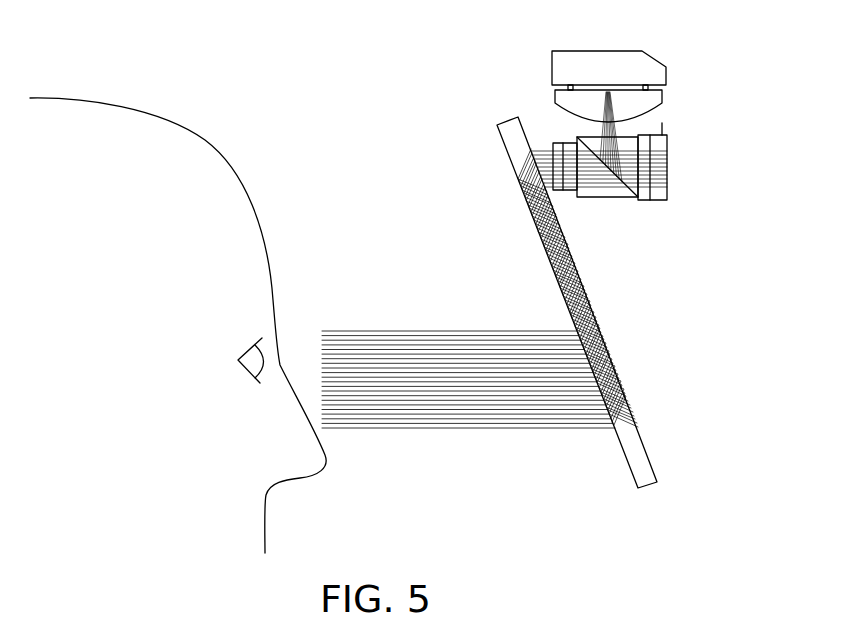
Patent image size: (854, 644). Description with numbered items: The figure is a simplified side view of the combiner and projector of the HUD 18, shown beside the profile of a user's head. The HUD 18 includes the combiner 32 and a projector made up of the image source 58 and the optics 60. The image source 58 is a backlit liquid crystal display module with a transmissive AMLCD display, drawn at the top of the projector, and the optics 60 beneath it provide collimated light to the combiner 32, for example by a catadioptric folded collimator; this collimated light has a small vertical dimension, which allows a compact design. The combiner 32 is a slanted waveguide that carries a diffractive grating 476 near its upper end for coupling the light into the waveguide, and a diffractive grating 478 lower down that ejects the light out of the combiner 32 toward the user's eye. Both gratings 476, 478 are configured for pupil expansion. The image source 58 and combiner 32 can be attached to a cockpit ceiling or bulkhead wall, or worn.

The HUD 18 is at (737, 88).
The combiner 32 is at (505, 132).
The image source 58 is at (657, 68).
The optics 60 is at (655, 115).
The diffractive grating 476 is at (515, 172).
The diffractive grating 478 is at (622, 392).